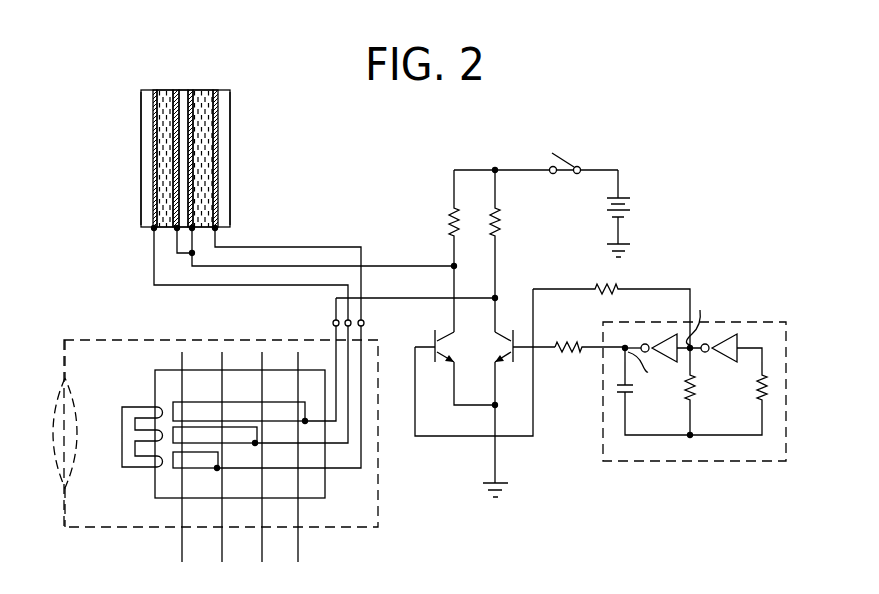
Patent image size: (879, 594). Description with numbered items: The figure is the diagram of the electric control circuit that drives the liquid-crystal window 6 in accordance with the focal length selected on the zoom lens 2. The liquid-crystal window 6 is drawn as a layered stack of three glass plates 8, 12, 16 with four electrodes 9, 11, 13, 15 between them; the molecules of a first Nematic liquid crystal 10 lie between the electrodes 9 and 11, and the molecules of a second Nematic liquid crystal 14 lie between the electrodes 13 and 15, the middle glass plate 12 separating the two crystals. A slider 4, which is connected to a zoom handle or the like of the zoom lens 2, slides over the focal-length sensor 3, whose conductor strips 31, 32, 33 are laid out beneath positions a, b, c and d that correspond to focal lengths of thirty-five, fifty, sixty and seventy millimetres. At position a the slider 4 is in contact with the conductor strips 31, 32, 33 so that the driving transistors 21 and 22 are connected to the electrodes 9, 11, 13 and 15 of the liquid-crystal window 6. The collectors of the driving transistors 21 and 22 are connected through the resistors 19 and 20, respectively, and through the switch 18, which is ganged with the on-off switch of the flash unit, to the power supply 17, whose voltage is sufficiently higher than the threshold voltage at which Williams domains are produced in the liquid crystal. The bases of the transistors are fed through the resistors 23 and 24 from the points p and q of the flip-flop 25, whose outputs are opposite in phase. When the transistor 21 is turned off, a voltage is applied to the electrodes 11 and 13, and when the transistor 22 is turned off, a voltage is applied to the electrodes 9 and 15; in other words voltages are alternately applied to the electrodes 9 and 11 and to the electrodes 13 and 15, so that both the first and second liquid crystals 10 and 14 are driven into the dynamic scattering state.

The zoom lens 2 is at (74, 460).
The focal-length sensor 3 is at (223, 425).
The slider 4 is at (138, 467).
The liquid-crystal window 6 is at (191, 122).
The glass plate 8 is at (141, 101).
The electrode 9 is at (155, 90).
The first Nematic liquid crystal 10 is at (165, 90).
The electrode 11 is at (176, 90).
The glass plate 12 is at (183, 90).
The electrode 13 is at (190, 90).
The second Nematic liquid crystal 14 is at (203, 90).
The electrode 15 is at (215, 90).
The glass plate 16 is at (230, 101).
The power supply 17 is at (633, 205).
The switch 18 is at (556, 152).
The resistor 19 is at (452, 222).
The resistor 20 is at (498, 224).
The driving transistor 21 is at (438, 366).
The driving transistor 22 is at (503, 338).
The resistor 23 is at (600, 282).
The resistor 24 is at (565, 350).
The flip-flop 25 is at (608, 455).
The conductor strip 31 is at (203, 402).
The conductor strip 32 is at (240, 432).
The conductor strip 33 is at (197, 470).